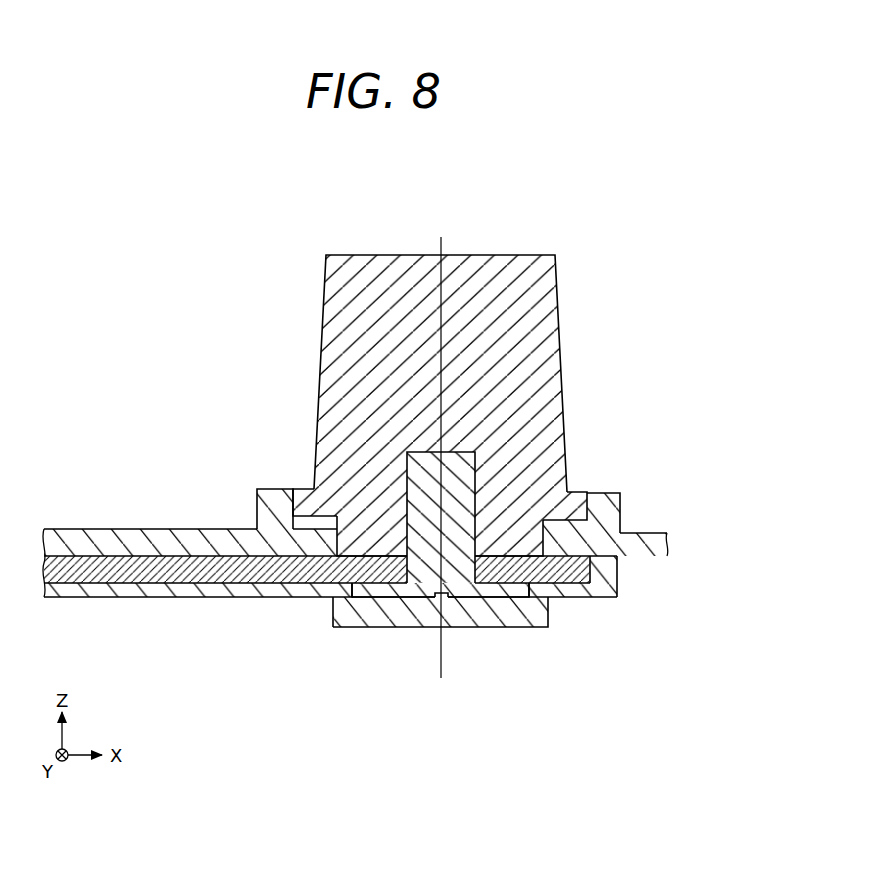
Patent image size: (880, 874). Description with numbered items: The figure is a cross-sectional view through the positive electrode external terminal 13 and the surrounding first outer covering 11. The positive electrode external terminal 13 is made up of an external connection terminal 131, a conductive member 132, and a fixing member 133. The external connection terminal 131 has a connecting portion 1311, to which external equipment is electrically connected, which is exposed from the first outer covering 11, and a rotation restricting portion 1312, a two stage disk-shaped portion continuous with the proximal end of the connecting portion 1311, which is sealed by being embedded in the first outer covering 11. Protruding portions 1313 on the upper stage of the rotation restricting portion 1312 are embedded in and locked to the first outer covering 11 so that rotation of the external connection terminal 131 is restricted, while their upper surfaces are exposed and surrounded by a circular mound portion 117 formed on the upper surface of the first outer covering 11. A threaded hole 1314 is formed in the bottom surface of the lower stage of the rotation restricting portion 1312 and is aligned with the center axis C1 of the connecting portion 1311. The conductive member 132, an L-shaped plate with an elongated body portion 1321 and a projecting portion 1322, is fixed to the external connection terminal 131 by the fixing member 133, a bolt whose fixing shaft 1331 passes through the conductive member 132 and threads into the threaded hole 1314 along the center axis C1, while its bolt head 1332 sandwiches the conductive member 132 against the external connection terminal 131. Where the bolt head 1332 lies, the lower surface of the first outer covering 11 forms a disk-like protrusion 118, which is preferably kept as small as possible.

The first outer covering 11 is at (195, 600).
The positive electrode external terminal 13 is at (519, 236).
The external connection terminal 131 is at (566, 392).
The connecting portion 1311 is at (323, 321).
The rotation restricting portion 1312 is at (592, 517).
The protruding portions 1313 is at (290, 489).
The threaded hole 1314 is at (414, 470).
The conductive member 132 is at (150, 550).
The body portion 1321 is at (128, 584).
The projecting portion 1322 is at (568, 585).
The fixing member 133 is at (417, 601).
The fixing shaft 1331 is at (458, 600).
The bolt head 1332 is at (527, 590).
The mound portion 117 is at (256, 512).
The protrusion 118 is at (333, 624).
The center axis C1 is at (445, 655).